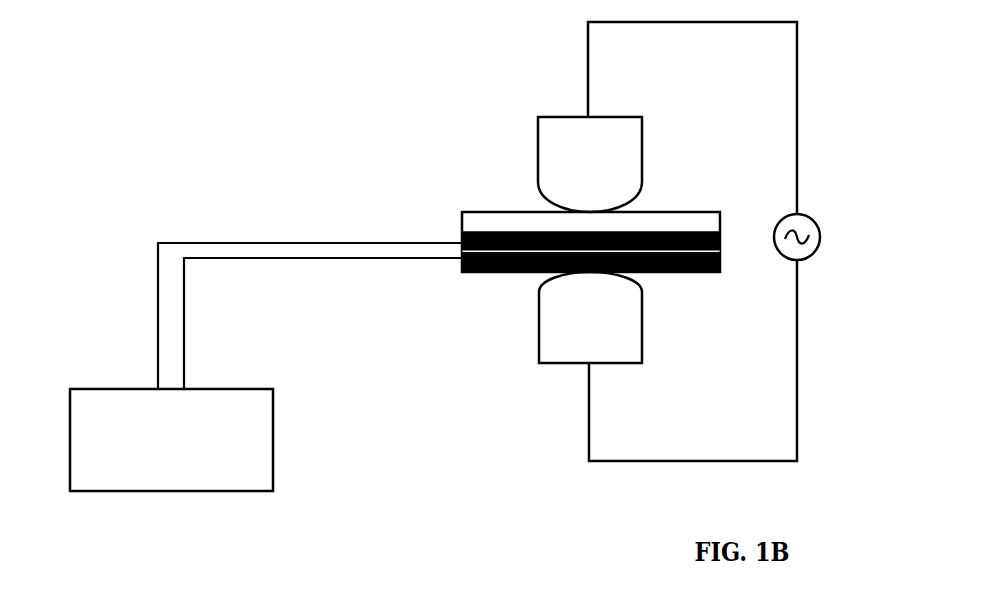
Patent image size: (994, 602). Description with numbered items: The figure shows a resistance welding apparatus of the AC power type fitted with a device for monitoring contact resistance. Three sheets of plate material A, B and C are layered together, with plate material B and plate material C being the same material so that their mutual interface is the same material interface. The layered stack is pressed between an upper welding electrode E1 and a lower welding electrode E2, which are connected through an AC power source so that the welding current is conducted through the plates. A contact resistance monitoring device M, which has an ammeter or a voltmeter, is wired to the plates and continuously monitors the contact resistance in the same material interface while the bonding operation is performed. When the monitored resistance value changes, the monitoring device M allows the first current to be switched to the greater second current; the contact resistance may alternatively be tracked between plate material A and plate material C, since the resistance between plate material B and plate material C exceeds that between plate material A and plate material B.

The plate material A is at (506, 218).
The plate material B is at (479, 232).
The plate material C is at (496, 272).
The welding electrode E1 is at (630, 180).
The welding electrode E2 is at (631, 310).
The contact resistance monitoring device M is at (118, 389).